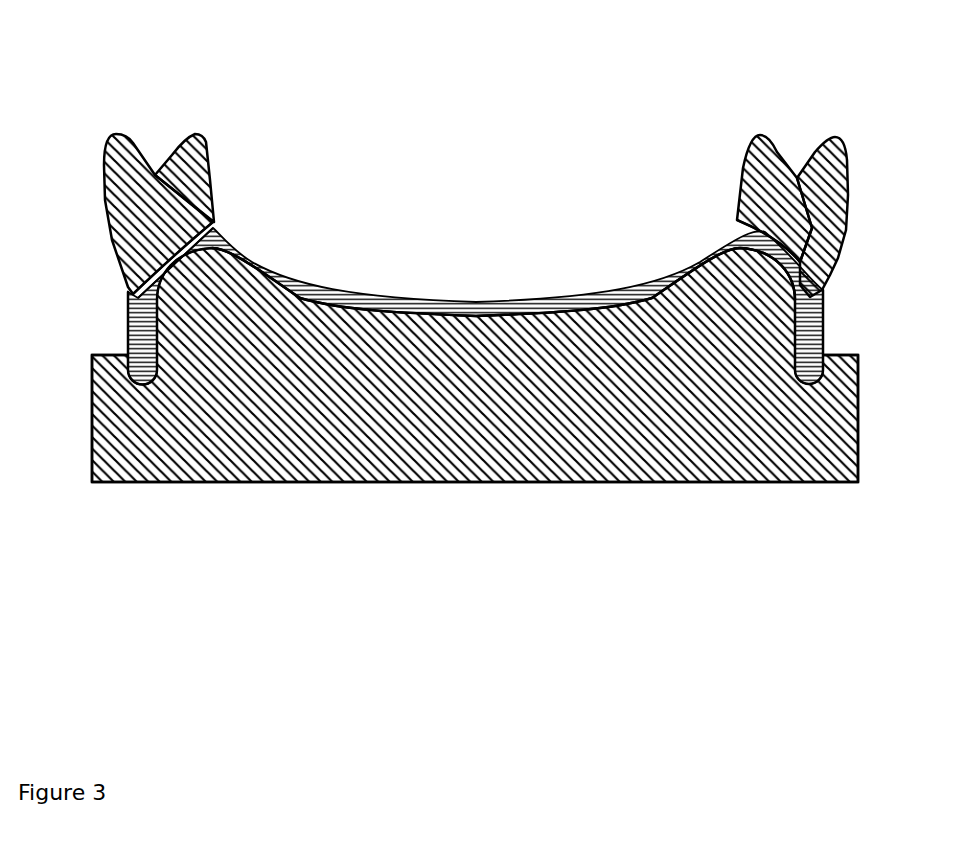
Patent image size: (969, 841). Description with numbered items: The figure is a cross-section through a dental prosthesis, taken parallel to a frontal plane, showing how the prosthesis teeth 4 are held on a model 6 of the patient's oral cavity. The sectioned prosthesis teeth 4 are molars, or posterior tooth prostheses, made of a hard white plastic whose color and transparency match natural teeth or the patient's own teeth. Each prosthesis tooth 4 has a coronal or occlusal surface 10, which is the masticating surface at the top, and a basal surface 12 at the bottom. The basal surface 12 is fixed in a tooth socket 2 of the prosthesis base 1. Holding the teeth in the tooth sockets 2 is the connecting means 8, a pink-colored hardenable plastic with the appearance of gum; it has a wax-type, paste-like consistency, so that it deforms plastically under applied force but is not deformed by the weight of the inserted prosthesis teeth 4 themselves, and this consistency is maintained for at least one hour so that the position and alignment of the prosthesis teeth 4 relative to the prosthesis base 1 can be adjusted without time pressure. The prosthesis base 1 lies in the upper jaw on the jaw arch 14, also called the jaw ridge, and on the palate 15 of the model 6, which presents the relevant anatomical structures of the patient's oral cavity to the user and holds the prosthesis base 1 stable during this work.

The prosthesis base 1 is at (463, 300).
The tooth sockets 2 is at (792, 257).
The prosthesis teeth 4 is at (178, 205).
The model of the oral cavity 6 is at (472, 403).
The connecting means 8 is at (138, 262).
The occlusal surface 10 is at (155, 170).
The basal surface 12 is at (769, 243).
The jaw arch 14 is at (203, 285).
The palate 15 is at (426, 325).